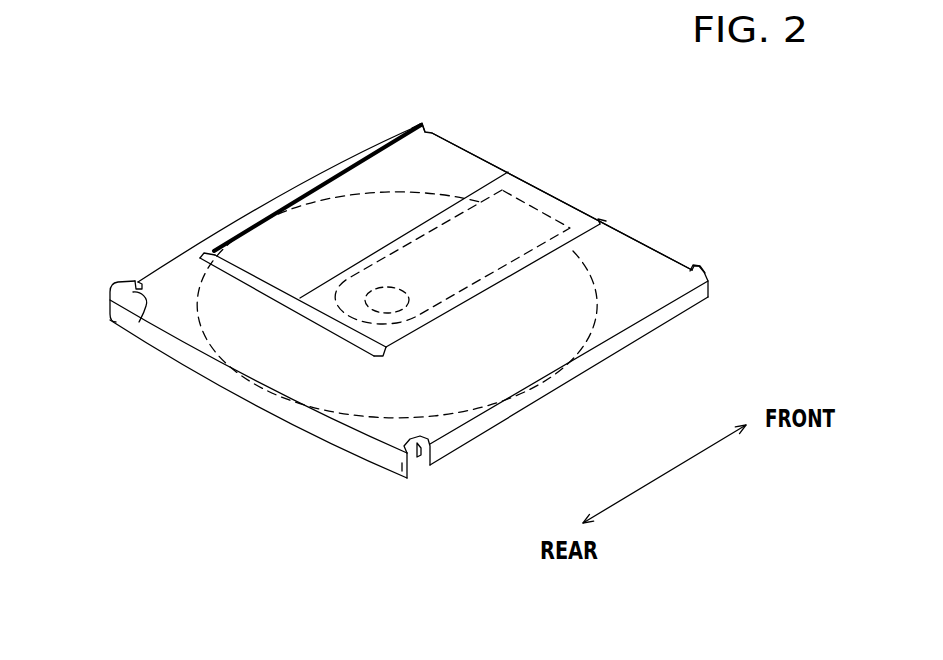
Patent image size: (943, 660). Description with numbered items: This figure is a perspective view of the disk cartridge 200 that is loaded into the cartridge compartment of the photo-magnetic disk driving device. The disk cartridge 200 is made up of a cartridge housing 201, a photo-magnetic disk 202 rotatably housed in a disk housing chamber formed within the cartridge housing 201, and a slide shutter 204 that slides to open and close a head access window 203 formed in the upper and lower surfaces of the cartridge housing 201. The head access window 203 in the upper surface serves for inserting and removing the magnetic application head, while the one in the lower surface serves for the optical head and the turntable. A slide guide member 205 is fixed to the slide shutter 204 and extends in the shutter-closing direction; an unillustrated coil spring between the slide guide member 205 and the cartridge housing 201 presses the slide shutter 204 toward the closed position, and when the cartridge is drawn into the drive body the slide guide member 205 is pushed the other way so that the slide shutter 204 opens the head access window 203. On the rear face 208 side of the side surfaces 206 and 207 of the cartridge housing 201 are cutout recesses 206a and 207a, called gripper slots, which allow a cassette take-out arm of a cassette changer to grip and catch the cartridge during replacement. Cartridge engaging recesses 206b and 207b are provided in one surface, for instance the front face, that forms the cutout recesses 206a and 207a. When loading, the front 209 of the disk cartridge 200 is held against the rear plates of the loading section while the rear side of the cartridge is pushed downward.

The disk cartridge 200 is at (299, 25).
The cartridge housing 201 is at (263, 217).
The photo-magnetic disk 202 is at (441, 192).
The head access window 203 is at (545, 208).
The slide shutter 204 is at (521, 187).
The slide guide member 205 is at (692, 268).
The side surface 206 is at (213, 234).
The cutout recess 206a is at (130, 287).
The cartridge engaging recess 206b is at (139, 320).
The side surface 207 is at (512, 403).
The cutout recess 207a is at (413, 468).
The cartridge engaging recess 207b is at (430, 462).
The rear face 208 is at (252, 397).
The front 209 is at (620, 229).